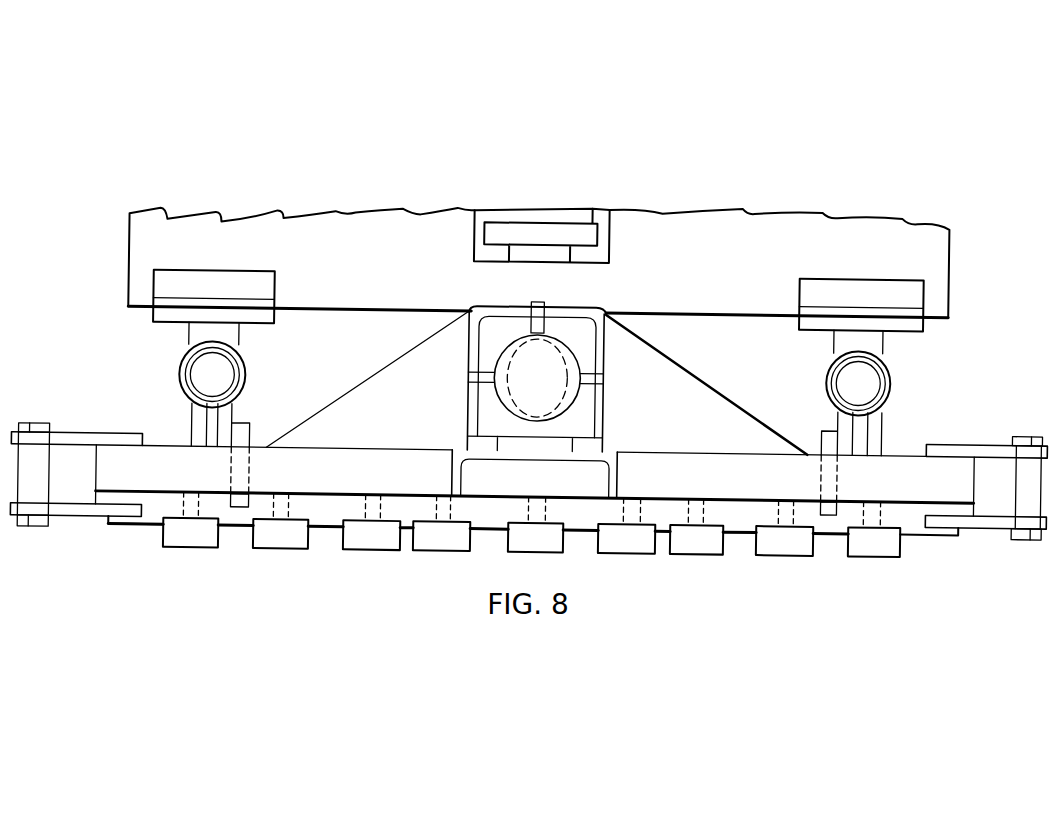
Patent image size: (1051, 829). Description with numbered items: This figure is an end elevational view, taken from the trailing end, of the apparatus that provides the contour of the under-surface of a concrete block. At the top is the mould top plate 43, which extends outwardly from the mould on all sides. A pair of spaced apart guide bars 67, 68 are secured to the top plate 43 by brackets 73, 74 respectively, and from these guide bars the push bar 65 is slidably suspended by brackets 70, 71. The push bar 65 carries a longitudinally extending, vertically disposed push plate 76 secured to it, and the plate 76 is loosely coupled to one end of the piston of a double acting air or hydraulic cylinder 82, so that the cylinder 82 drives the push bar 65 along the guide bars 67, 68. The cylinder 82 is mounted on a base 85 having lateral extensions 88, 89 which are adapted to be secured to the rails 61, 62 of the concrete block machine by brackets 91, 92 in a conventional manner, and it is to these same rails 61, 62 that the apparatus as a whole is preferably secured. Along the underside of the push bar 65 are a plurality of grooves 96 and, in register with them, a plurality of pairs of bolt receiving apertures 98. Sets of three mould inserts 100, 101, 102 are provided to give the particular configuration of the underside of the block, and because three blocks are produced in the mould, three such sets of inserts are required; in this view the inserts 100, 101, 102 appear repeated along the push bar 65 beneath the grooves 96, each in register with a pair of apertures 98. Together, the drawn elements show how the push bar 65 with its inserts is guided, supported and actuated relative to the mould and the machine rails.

The mould top plate 43 is at (321, 299).
The bracket 73 is at (164, 328).
The bracket 74 is at (910, 328).
The guide bar 67 is at (232, 376).
The guide bar 68 is at (848, 381).
The bracket 70 is at (192, 430).
The bracket 71 is at (880, 432).
The lateral extension 88 is at (372, 464).
The push plate 76 is at (653, 358).
The double acting air or hydraulic cylinder 82 is at (572, 362).
The base 85 is at (618, 453).
The lateral extension 89 is at (680, 462).
The bracket 91 is at (82, 439).
The bracket 92 is at (957, 451).
The rail 61 is at (80, 497).
The rail 62 is at (1002, 505).
The bolt receiving apertures 98 is at (348, 509).
The grooves 96 is at (197, 524).
The mould insert 100 is at (166, 549).
The mould insert 101 is at (256, 549).
The mould insert 102 is at (346, 548).
The push bar 65 is at (648, 514).